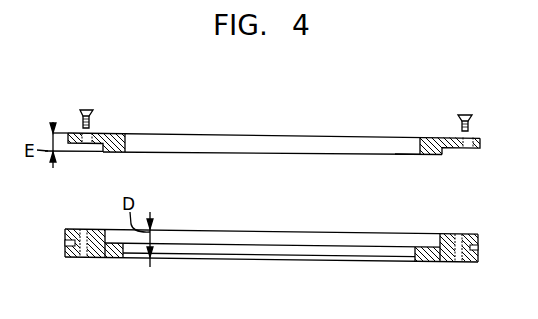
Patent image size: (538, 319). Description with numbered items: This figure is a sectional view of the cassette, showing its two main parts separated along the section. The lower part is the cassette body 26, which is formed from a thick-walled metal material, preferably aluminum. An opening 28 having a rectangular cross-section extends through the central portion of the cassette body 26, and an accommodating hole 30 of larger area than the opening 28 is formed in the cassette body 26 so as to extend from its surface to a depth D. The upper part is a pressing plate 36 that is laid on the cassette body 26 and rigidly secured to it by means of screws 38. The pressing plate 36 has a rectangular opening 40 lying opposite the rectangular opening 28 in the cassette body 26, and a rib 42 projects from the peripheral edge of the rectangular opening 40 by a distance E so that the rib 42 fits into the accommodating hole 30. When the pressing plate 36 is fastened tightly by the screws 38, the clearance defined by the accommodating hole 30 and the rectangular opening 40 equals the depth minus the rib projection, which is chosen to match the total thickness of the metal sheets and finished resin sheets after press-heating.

The cassette body 26 is at (452, 255).
The opening 28 is at (318, 257).
The accommodating hole 30 is at (373, 237).
The pressing plate 36 is at (435, 139).
The screws 38 is at (92, 117).
The rectangular opening 40 is at (292, 150).
The rib 42 is at (412, 158).